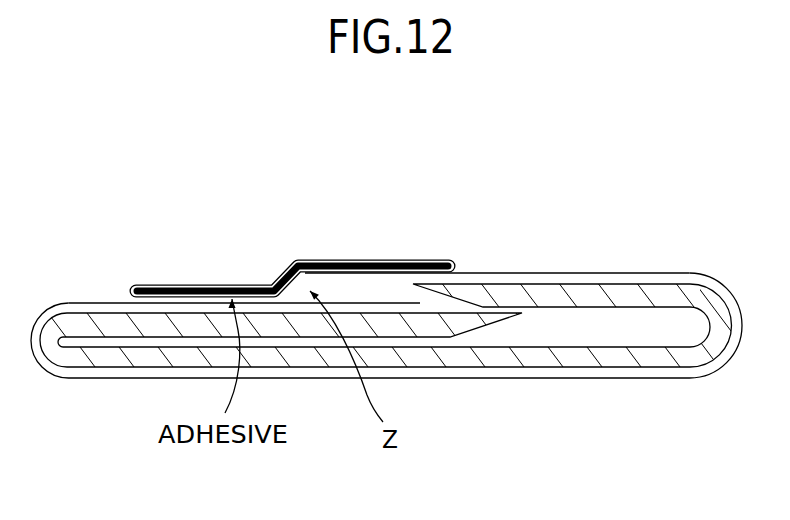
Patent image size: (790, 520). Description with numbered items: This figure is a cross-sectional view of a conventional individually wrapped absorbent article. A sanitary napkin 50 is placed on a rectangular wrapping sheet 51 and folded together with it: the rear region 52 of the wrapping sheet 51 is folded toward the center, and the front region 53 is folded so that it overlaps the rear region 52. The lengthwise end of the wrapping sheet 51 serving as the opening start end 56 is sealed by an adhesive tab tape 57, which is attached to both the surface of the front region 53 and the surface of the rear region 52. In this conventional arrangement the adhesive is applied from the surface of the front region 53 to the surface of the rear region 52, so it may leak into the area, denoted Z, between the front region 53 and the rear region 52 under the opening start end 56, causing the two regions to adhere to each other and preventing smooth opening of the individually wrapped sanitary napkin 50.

The sanitary napkin 50 is at (651, 369).
The wrapping sheet 51 is at (523, 380).
The rear region 52 is at (98, 303).
The front region 53 is at (543, 273).
The opening start end 56 is at (305, 259).
The adhesive tab tape 57 is at (193, 284).